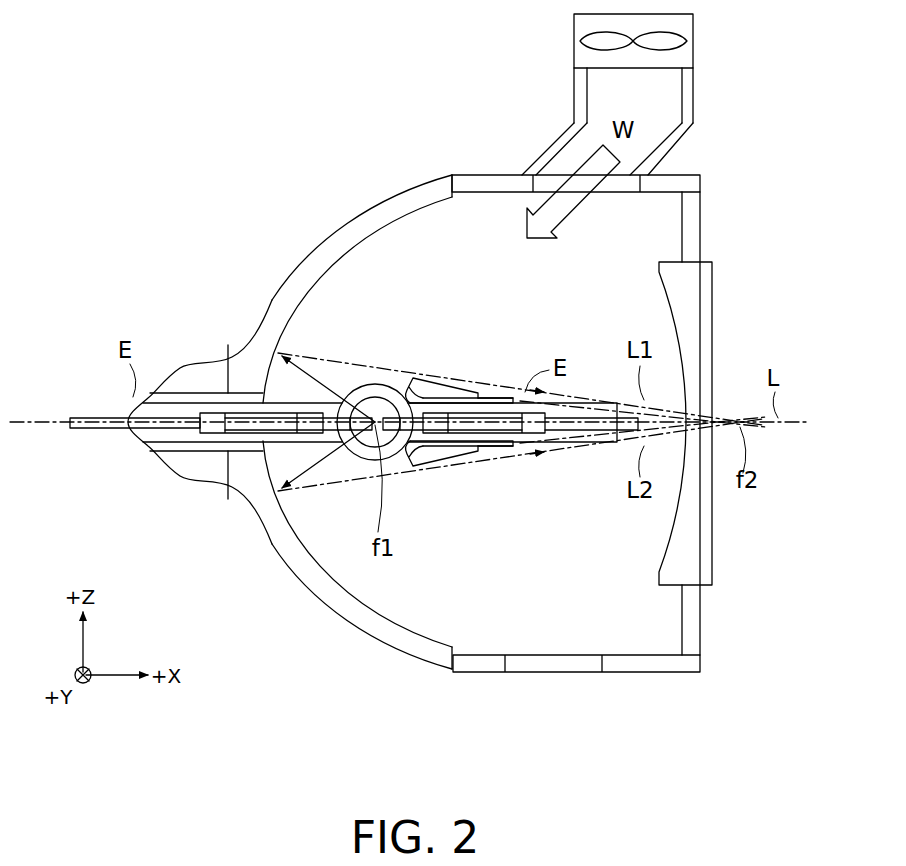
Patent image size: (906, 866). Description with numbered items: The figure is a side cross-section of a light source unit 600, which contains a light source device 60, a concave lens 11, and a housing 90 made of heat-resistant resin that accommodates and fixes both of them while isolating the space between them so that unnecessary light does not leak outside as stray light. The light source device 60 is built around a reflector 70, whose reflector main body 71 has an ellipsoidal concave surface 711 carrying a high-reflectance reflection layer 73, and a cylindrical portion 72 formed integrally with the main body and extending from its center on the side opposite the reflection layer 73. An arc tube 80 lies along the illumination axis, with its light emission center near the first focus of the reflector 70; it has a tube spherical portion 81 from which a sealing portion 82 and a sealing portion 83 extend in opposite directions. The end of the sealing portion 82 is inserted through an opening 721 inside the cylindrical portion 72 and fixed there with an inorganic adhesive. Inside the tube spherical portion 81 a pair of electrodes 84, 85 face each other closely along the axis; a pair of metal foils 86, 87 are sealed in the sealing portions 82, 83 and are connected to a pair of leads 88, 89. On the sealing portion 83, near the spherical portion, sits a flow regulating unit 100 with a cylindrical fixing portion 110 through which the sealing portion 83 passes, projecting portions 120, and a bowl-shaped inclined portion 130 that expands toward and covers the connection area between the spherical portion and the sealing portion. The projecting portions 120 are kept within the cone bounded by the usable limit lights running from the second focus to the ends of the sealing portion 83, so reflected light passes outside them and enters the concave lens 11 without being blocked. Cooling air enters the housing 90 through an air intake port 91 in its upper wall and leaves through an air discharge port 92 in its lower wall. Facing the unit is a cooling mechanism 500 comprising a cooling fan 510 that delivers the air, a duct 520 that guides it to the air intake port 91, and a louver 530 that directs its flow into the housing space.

The light source unit 600 is at (276, 86).
The light source device 60 is at (424, 159).
The reflector 70 is at (290, 385).
The reflector main body 71 is at (352, 414).
The concave surface 711 is at (323, 278).
The reflection layer 73 is at (386, 228).
The cylindrical portion 72 is at (200, 391).
The opening 721 is at (228, 345).
The arc tube 80 is at (354, 411).
The tube spherical portion 81 is at (368, 385).
The sealing portion 82 is at (280, 445).
The electrode 84 is at (362, 430).
The electrode 85 is at (388, 430).
The metal foil 86 is at (220, 450).
The metal foil 87 is at (485, 437).
The sealing portion 83 is at (524, 447).
The lead 88 is at (93, 432).
The lead 89 is at (563, 432).
The flow regulating unit 100 is at (470, 368).
The fixing portion 110 is at (400, 312).
The projecting portions 120 is at (478, 391).
The inclined portion 130 is at (424, 377).
The housing 90 is at (609, 457).
The air intake port 91 is at (622, 194).
The air discharge port 92 is at (551, 674).
The concave lens 11 is at (702, 300).
The cooling mechanism 500 is at (686, 94).
The cooling fan 510 is at (696, 42).
The duct 520 is at (696, 97).
The louver 530 is at (652, 149).